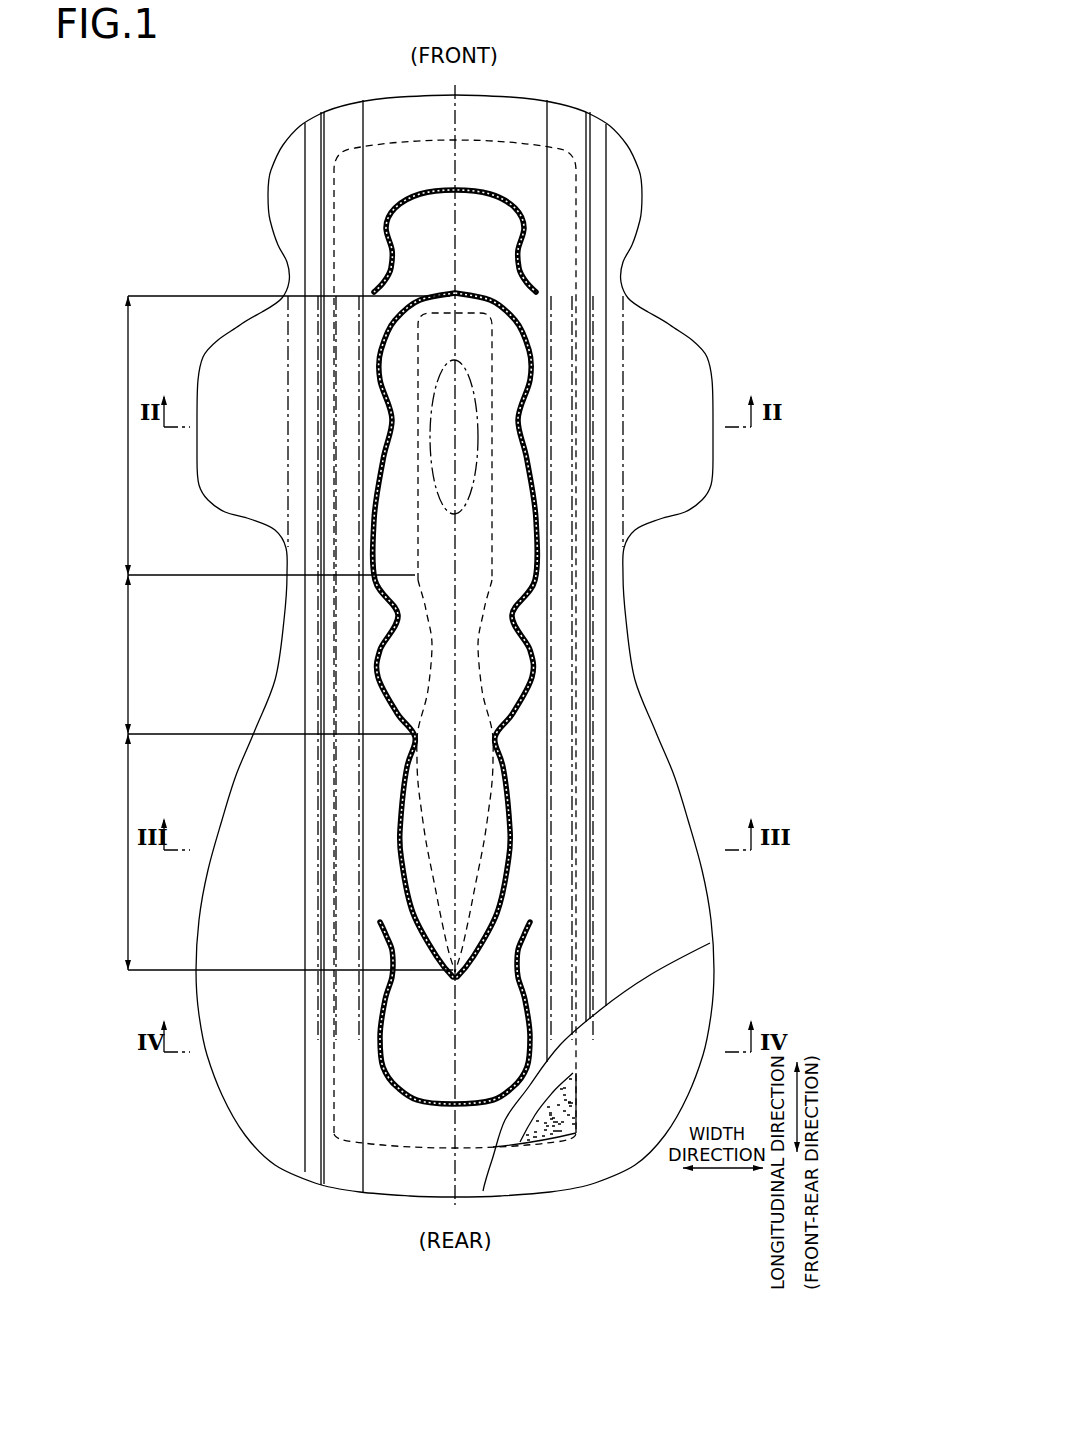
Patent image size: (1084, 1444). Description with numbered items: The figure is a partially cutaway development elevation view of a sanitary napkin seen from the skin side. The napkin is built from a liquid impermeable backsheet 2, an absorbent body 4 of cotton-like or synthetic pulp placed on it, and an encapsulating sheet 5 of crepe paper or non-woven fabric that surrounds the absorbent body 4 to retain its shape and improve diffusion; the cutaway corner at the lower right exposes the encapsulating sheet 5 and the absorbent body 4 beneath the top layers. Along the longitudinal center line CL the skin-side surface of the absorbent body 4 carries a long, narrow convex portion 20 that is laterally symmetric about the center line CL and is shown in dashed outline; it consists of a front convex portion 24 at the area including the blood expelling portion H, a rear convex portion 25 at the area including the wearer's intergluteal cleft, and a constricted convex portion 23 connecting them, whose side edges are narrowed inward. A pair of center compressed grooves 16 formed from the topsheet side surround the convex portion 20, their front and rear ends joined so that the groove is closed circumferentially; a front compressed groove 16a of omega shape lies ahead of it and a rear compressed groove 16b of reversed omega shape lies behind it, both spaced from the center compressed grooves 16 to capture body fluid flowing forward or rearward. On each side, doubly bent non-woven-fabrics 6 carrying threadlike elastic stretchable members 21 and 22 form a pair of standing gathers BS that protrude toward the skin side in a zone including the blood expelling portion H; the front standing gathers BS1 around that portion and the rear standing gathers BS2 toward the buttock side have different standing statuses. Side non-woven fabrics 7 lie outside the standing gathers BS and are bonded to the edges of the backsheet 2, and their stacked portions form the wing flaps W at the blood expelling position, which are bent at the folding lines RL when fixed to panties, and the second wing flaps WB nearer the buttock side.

The liquid impermeable backsheet 2 is at (690, 993).
The absorbent body 4 is at (568, 1120).
The encapsulating sheet 5 is at (563, 1057).
The non-woven-fabrics for forming standing gathers 6 is at (310, 795).
The side non-woven fabrics 7 is at (212, 915).
The center compressed grooves 16 is at (540, 588).
The front compressed groove 16a is at (495, 190).
The rear compressed groove 16b is at (408, 1107).
The convex portion 20 is at (499, 346).
The threadlike elastic stretchable members 21 is at (318, 603).
The threadlike elastic stretchable members 22 is at (322, 658).
The constricted convex portion 23 is at (258, 659).
The front convex portion 24 is at (276, 440).
The rear convex portion 25 is at (117, 852).
The wing flaps W is at (222, 331).
The second wing flaps WB is at (193, 932).
The standing gathers BS is at (316, 447).
The front standing gathers BS1 is at (369, 461).
The rear standing gathers BS2 is at (303, 875).
The folding lines RL is at (288, 478).
The blood expelling portion H is at (450, 514).
The center line CL is at (455, 1207).